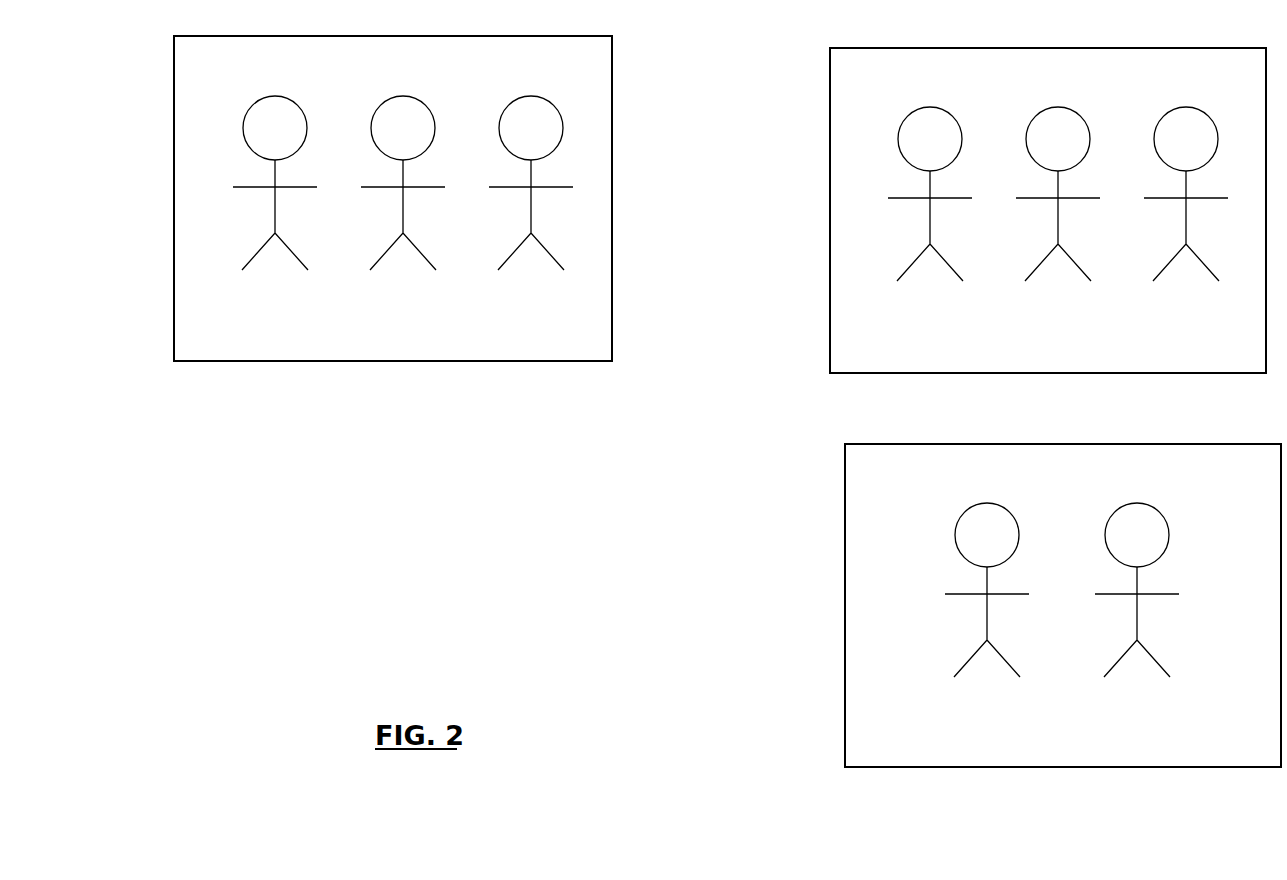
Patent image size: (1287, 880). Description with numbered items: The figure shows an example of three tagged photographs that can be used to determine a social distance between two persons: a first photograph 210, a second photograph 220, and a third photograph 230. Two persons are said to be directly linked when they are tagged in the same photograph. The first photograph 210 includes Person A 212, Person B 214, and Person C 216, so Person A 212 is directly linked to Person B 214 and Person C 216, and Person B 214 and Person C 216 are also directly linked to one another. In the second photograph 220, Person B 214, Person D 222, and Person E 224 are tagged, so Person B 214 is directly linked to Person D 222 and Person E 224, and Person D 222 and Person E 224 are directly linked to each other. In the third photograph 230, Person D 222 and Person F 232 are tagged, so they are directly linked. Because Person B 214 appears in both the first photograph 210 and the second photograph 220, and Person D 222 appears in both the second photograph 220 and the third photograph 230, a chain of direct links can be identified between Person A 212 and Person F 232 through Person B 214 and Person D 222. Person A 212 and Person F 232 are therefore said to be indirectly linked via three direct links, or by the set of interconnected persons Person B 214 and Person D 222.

The first photograph 210 is at (612, 102).
The Person A 212 is at (249, 110).
The Person B 214 is at (377, 110).
The Person C 216 is at (505, 110).
The second photograph 220 is at (830, 91).
The Person D 222 is at (904, 121).
The Person E 224 is at (1160, 121).
The third photograph 230 is at (845, 497).
The Person F 232 is at (1111, 517).